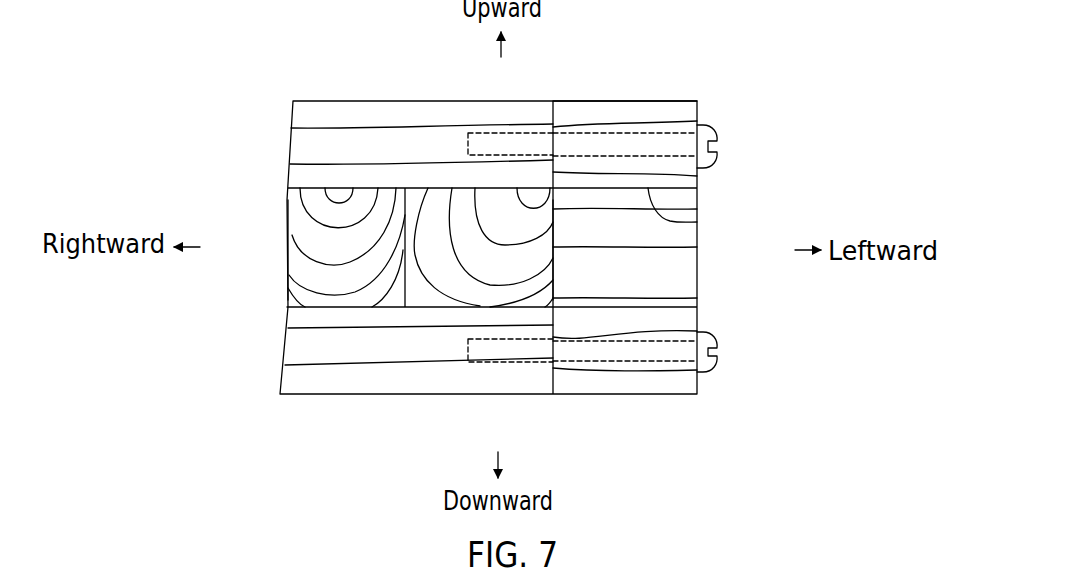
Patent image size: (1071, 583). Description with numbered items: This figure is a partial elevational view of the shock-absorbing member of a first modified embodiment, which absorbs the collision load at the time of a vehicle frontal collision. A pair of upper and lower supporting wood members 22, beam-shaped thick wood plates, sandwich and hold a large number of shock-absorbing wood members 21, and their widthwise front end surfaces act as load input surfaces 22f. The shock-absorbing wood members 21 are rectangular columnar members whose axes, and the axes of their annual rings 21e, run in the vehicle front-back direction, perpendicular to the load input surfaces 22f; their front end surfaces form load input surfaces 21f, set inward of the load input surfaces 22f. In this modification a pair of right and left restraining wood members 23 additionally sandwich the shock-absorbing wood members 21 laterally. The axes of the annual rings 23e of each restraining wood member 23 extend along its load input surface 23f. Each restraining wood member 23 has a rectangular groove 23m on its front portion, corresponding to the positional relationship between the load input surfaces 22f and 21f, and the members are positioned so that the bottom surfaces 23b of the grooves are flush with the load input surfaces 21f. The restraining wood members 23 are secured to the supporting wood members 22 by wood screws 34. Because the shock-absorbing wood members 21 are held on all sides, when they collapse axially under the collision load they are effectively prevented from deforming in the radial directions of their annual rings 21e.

The shock-absorbing wood member 21 is at (330, 246).
The annual rings of shock-absorbing wood member 21e is at (305, 278).
The load input surface of shock-absorbing wood member 21f is at (500, 260).
The supporting wood member 22 is at (398, 143).
The load input surface of supporting wood member 22f is at (330, 110).
The restraining wood member 23 is at (610, 116).
The annual rings of restraining wood member 23e is at (644, 128).
The load input surface of restraining wood member 23f is at (675, 142).
The bottom surface of rectangular groove 23b is at (675, 268).
The rectangular groove 23m is at (697, 222).
The wood screw 34 is at (717, 136).